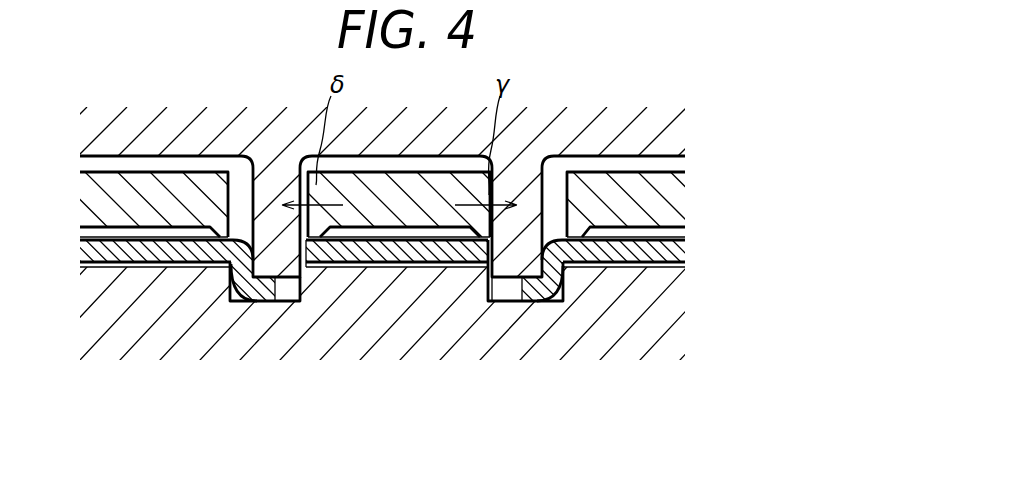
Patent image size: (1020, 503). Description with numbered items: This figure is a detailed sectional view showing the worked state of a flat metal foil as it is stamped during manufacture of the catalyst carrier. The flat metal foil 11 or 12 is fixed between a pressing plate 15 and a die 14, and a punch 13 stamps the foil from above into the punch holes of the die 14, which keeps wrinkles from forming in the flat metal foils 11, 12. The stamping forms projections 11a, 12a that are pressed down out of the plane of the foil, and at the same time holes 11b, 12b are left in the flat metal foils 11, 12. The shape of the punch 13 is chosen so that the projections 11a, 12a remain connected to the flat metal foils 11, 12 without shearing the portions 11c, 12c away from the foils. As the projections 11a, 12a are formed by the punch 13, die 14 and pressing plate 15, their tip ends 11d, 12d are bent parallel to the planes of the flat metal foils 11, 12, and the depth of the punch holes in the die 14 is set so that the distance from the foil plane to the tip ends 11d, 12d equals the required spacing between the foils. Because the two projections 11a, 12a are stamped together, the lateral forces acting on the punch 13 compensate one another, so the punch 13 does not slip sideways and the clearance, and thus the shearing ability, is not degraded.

The flat metal foil 11 is at (392, 357).
The flat metal foil 12 is at (392, 357).
The projection 11a is at (428, 351).
The projection 12a is at (257, 298).
The hole 11b is at (383, 338).
The hole 12b is at (308, 244).
The portion 11c is at (397, 321).
The portion 12c is at (231, 265).
The tip end 11d is at (430, 376).
The tip end 12d is at (530, 293).
The punch 13 is at (300, 135).
The die 14 is at (423, 323).
The pressing plate 15 is at (420, 200).